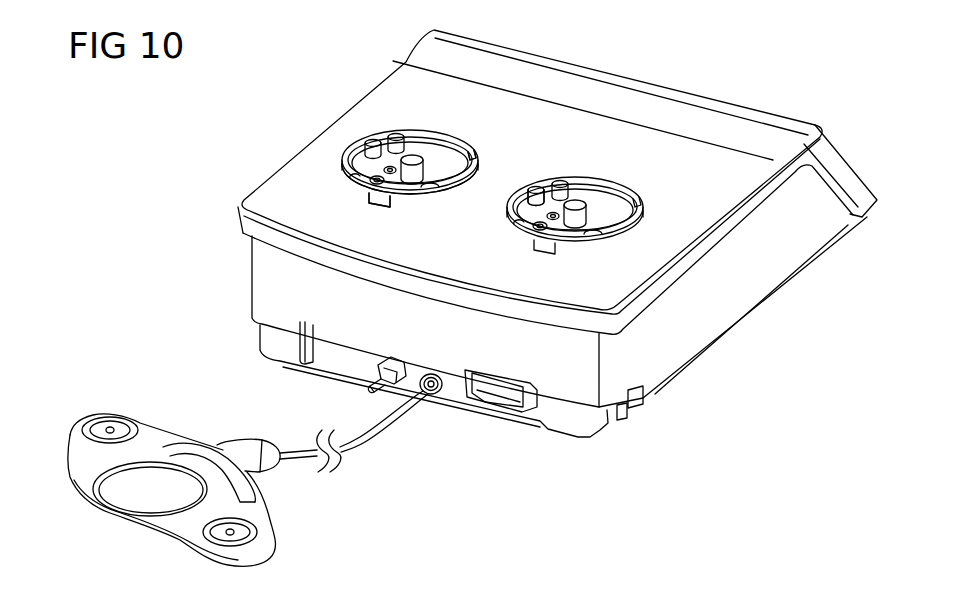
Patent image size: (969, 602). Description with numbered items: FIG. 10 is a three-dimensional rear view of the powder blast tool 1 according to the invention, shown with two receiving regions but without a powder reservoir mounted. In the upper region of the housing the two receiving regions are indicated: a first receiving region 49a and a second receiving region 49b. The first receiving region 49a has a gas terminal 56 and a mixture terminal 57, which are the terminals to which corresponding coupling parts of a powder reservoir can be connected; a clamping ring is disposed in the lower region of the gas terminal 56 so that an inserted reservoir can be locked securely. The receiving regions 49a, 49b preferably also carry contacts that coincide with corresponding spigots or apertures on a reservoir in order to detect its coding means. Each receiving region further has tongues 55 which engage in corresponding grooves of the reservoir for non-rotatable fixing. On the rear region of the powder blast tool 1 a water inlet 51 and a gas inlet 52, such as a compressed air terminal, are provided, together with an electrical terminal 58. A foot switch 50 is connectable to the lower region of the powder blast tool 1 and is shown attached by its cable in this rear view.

The powder blast tool 1 is at (303, 160).
The first receiving region 49a is at (447, 162).
The second receiving region 49b is at (618, 207).
The tongues 55 is at (543, 181).
The gas terminal 56 is at (411, 158).
The mixture terminal 57 is at (437, 196).
The gas inlet 52 is at (371, 389).
The water inlet 51 is at (443, 408).
The electrical terminal 58 is at (505, 402).
The foot switch 50 is at (242, 532).